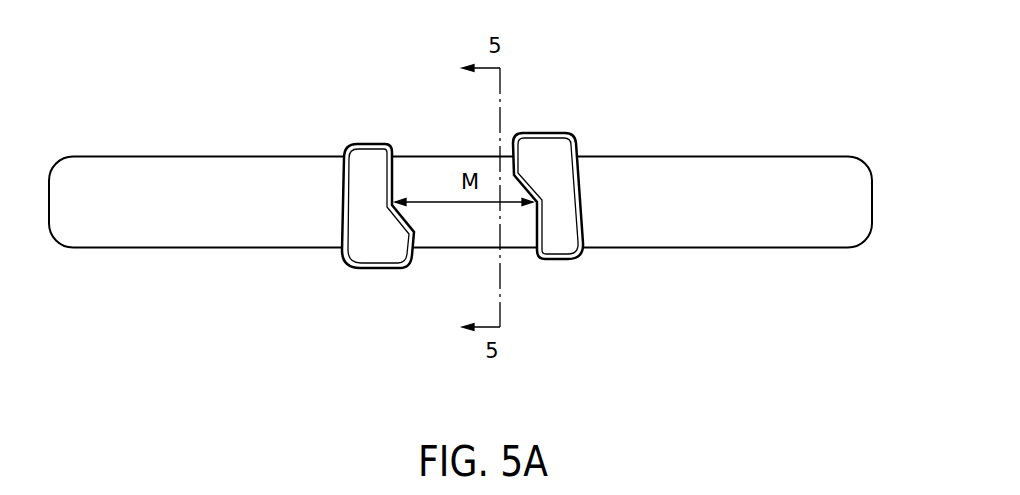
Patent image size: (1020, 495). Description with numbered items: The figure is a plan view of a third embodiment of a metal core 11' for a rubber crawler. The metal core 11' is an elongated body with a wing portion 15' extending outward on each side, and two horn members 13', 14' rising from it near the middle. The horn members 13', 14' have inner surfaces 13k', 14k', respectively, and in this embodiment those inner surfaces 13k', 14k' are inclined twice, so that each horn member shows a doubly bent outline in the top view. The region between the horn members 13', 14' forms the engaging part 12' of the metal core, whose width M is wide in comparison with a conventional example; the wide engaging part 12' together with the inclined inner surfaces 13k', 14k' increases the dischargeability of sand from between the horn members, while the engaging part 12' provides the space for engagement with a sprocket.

The metal core 11' is at (460, 172).
The engaging part 12' is at (450, 247).
The horn member 13' is at (393, 172).
The inner surface 13k' is at (396, 170).
The horn member 14' is at (545, 191).
The inner surface 14k' is at (540, 232).
The wing portion 15' is at (460, 238).